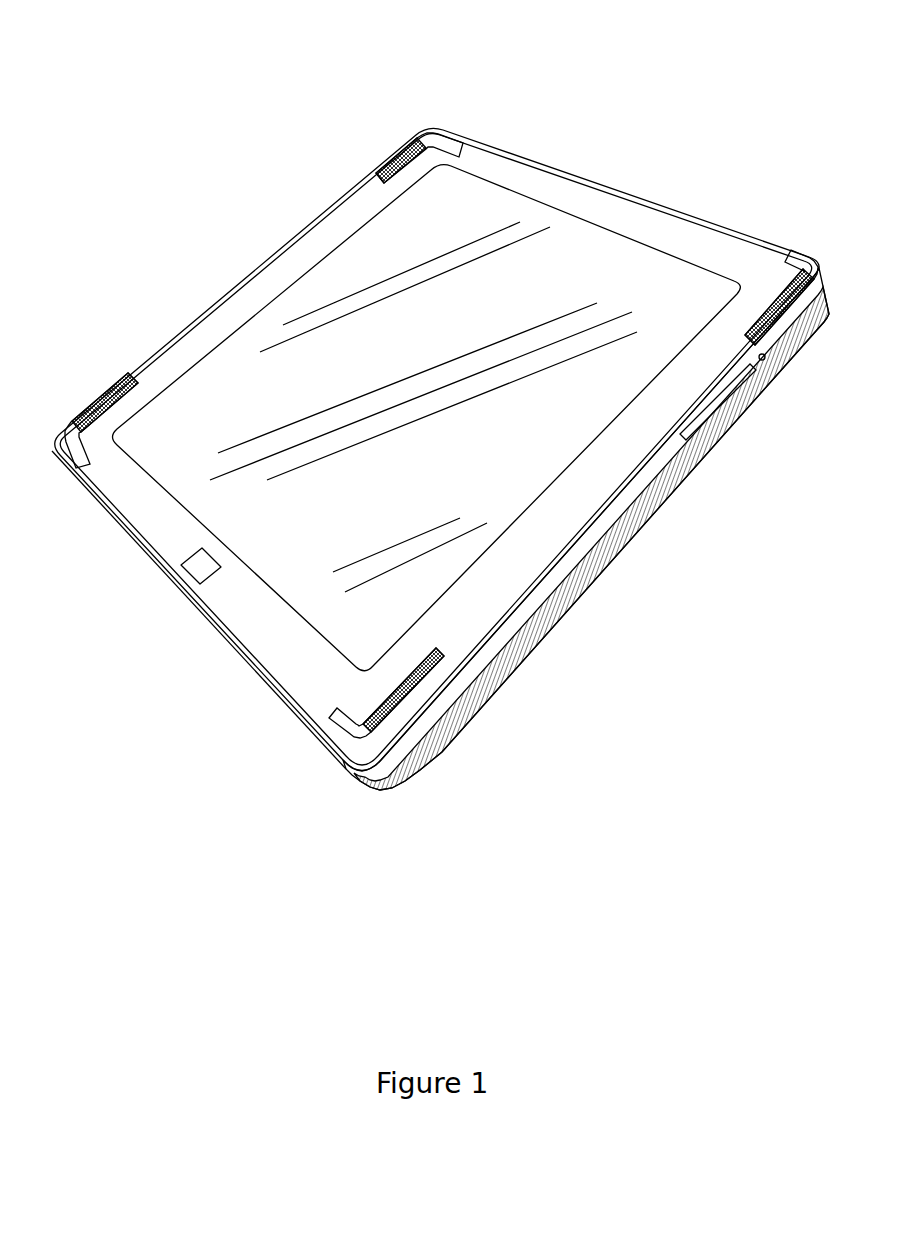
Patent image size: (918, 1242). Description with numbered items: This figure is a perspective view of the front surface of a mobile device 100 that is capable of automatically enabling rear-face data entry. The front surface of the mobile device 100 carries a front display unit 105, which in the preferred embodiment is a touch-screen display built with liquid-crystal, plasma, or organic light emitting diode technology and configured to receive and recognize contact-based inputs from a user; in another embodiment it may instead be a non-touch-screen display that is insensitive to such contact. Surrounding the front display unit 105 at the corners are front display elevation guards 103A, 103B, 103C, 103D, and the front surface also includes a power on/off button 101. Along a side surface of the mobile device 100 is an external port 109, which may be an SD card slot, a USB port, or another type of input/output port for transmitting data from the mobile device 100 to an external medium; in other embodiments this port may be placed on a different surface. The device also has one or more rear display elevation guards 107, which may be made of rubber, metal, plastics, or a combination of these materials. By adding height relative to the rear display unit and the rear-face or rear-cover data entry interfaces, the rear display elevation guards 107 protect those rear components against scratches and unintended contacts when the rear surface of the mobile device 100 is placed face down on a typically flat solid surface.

The mobile device 100 is at (431, 516).
The power on/off button 101 is at (185, 578).
The front display elevation guard 103A is at (407, 703).
The front display elevation guard 103B is at (802, 252).
The front display elevation guard 103C is at (425, 128).
The front display elevation guard 103D is at (80, 397).
The front display unit 105 is at (457, 487).
The rear display elevation guard 107 is at (623, 557).
The external port 109 is at (717, 413).